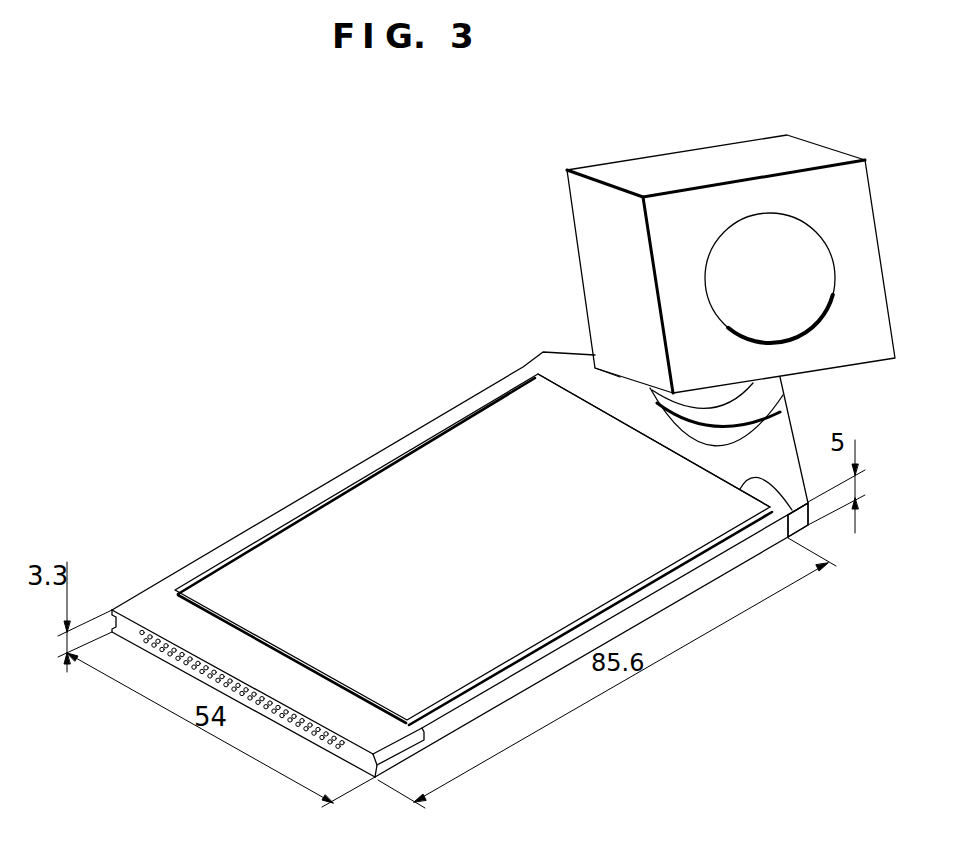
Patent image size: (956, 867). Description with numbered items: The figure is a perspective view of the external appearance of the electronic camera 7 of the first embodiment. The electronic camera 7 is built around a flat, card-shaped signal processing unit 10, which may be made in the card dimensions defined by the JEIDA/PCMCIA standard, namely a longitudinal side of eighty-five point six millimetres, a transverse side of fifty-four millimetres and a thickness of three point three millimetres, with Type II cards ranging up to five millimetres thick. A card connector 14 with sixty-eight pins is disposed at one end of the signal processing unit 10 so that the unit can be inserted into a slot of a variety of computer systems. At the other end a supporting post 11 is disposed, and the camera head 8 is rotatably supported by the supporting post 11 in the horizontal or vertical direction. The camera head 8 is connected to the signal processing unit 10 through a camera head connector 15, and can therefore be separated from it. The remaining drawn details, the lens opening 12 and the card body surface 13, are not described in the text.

The electronic camera 7 is at (442, 307).
The camera head 8 is at (597, 232).
The signal processing unit 10 is at (472, 438).
The supporting post 11 is at (737, 395).
The lens 12 is at (753, 243).
The PC card body 13 is at (382, 455).
The card connector 14 is at (285, 727).
The camera head connector 15 is at (792, 534).